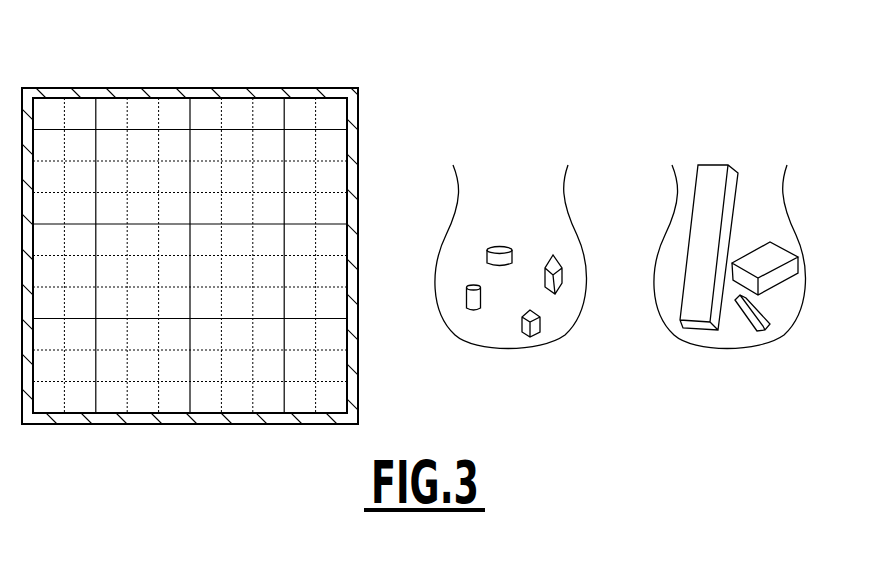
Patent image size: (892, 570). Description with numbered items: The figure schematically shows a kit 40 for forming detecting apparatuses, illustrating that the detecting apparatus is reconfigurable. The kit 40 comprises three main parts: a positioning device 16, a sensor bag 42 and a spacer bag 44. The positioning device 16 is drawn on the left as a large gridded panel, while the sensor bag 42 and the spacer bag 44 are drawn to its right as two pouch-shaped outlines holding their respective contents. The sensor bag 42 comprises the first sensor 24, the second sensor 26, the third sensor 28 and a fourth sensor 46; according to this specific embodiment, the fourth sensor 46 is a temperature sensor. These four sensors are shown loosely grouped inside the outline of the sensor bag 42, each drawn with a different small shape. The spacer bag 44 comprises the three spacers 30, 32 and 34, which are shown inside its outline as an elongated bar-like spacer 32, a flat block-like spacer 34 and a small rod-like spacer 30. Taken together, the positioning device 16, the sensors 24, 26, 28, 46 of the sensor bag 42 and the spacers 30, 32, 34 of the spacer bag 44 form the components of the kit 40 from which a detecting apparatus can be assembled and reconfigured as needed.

The positioning device 16 is at (168, 434).
The kit 40 is at (682, 52).
The sensor bag 42 is at (550, 134).
The spacer bag 44 is at (739, 130).
The fourth sensor 46 is at (495, 246).
The third sensor 28 is at (473, 311).
The second sensor 26 is at (562, 277).
The first sensor 24 is at (540, 323).
The spacer 32 is at (700, 318).
The spacer 34 is at (785, 275).
The spacer 30 is at (762, 331).